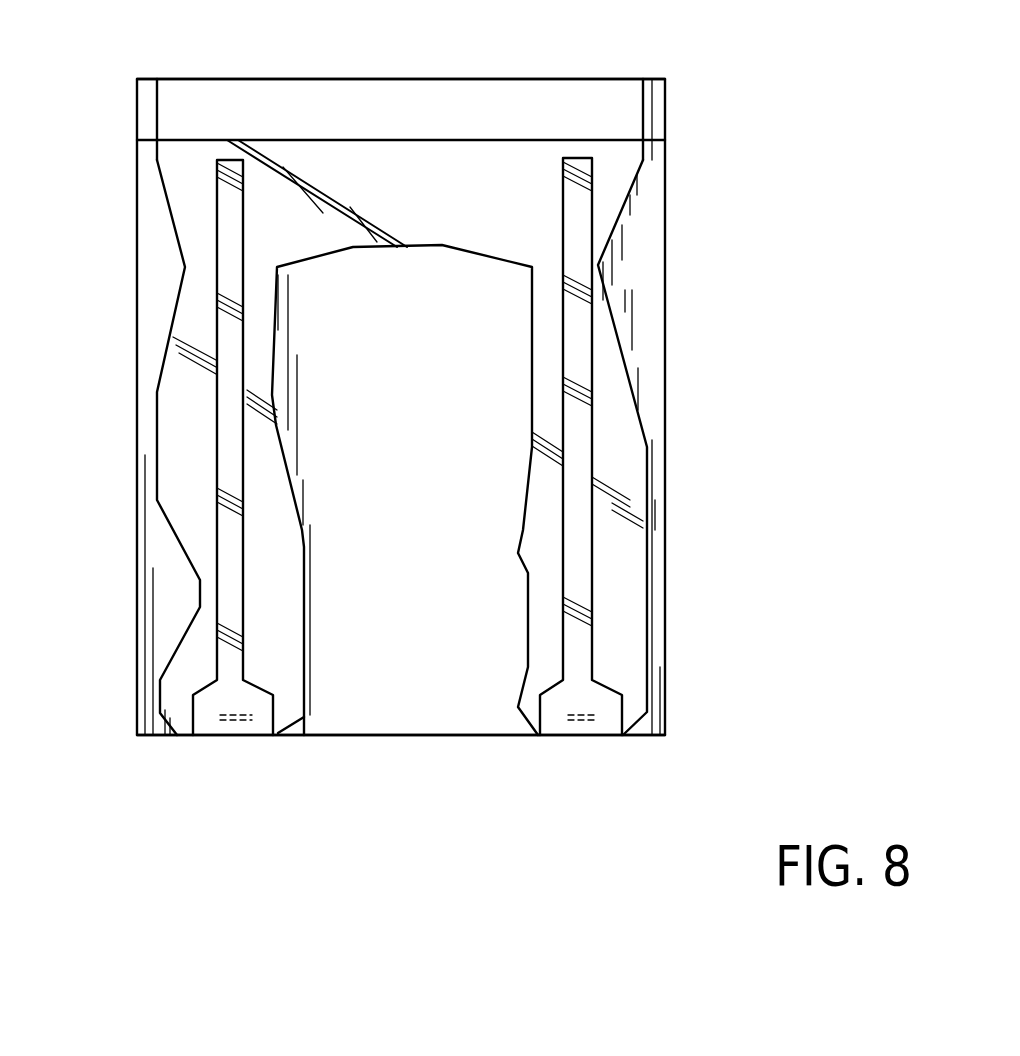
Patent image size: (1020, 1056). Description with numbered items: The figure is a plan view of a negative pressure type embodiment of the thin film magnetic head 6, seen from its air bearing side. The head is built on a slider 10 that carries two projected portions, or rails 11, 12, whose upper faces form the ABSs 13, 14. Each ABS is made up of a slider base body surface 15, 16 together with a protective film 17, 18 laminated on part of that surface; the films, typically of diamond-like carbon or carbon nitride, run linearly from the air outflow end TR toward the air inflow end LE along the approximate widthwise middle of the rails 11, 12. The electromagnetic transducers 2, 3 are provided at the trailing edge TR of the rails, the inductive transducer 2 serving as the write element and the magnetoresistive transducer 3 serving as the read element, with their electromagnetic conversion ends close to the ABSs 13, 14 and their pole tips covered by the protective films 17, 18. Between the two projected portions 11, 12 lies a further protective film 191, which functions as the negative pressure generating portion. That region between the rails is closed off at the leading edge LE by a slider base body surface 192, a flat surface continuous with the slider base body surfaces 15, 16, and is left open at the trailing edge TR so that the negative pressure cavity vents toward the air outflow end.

The electromagnetic transducer 2 is at (238, 722).
The electromagnetic transducer 3 is at (238, 715).
The thin film magnetic head 6 is at (128, 704).
The slider 10 is at (136, 609).
The rail (projected portion) 11 is at (157, 462).
The rail (projected portion) 12 is at (647, 556).
The ABS 13 is at (165, 315).
The ABS 14 is at (660, 479).
The slider base body surface 15 is at (182, 380).
The slider base body surface 16 is at (604, 330).
The protective film 17 is at (222, 497).
The protective film 18 is at (578, 412).
The protective film 191 is at (385, 648).
The slider base body surface 192 is at (416, 172).
The air inflow end (leading edge) LE is at (536, 70).
The air outflow end (trailing edge) TR is at (447, 745).